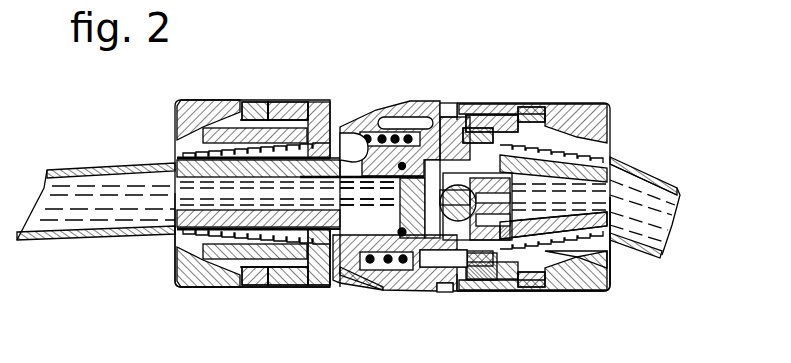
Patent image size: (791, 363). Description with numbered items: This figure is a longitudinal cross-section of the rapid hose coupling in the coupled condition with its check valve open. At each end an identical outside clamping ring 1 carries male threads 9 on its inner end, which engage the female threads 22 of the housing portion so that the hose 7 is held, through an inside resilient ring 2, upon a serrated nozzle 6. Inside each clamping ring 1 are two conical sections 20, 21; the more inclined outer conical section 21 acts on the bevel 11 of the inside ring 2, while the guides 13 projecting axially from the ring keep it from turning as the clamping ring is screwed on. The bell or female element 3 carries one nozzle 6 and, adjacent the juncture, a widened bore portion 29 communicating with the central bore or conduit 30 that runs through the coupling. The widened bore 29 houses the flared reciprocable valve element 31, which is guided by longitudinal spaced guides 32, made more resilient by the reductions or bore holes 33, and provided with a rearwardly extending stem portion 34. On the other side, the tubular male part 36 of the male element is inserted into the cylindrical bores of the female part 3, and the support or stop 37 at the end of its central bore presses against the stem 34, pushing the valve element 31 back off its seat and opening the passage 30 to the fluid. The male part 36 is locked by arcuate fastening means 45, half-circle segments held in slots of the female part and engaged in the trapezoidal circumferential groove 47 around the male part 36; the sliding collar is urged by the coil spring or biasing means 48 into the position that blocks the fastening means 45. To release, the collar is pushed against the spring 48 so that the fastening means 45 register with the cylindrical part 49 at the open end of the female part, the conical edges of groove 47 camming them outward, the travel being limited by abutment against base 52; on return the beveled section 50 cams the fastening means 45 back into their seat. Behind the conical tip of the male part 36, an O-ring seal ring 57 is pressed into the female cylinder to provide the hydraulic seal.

The outside clamping ring 1 is at (183, 114).
The inside resilient ring 2 is at (557, 253).
The bell or female element 3 is at (528, 110).
The nozzle 6 is at (153, 205).
The hose 7 is at (86, 163).
The male threads 9 is at (280, 112).
The bevel 11 is at (615, 258).
The guides 13 is at (472, 268).
The conical section 20 is at (518, 270).
The conical section 21 is at (580, 250).
The female threads 22 is at (250, 112).
The widened bore portion 29 is at (610, 183).
The bore or conduit 30 is at (612, 212).
The valve element 31 is at (498, 150).
The guides 32 is at (528, 115).
The reductions or bore holes 33 is at (447, 170).
The stem portion 34 is at (462, 168).
The male part 36 is at (375, 133).
The support or stop 37 is at (411, 133).
The fastening means 45 is at (343, 133).
The circumferential groove 47 is at (318, 289).
The elastic or biasing means 48 is at (386, 264).
The cylindrical part 49 is at (340, 262).
The beveled section 50 is at (352, 122).
The base 52 is at (445, 294).
The seal ring 57 is at (405, 283).